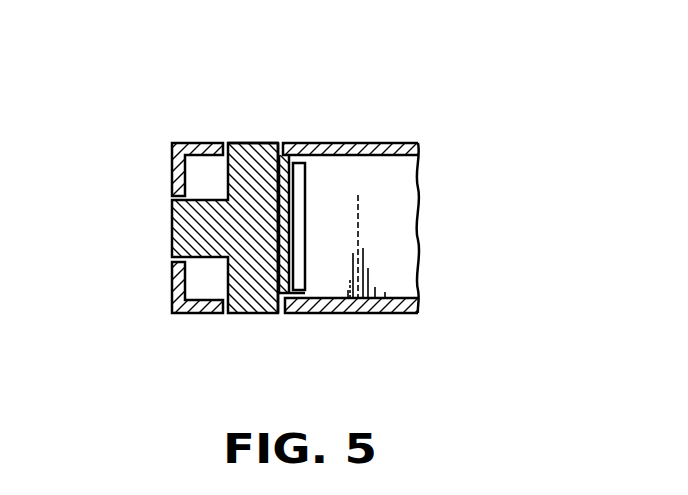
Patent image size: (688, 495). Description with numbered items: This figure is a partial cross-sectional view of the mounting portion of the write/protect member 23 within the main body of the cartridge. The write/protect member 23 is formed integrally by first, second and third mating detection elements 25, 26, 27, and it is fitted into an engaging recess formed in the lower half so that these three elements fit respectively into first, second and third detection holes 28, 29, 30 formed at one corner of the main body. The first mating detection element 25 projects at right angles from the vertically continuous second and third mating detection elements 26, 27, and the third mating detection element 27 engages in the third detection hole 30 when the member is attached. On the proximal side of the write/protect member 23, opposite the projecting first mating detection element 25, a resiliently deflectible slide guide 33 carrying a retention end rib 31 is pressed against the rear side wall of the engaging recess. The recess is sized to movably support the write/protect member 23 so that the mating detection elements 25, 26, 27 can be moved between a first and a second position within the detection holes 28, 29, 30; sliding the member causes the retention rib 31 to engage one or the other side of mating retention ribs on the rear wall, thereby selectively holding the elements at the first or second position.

The write/protect member 23 is at (302, 221).
The first mating detection element 25 is at (190, 233).
The second mating detection element 26 is at (250, 143).
The third mating detection element 27 is at (278, 312).
The first detection hole 28 is at (172, 207).
The second detection hole 29 is at (240, 143).
The third detection hole 30 is at (235, 313).
The retention end rib 31 is at (302, 188).
The slide guide 33 is at (290, 162).